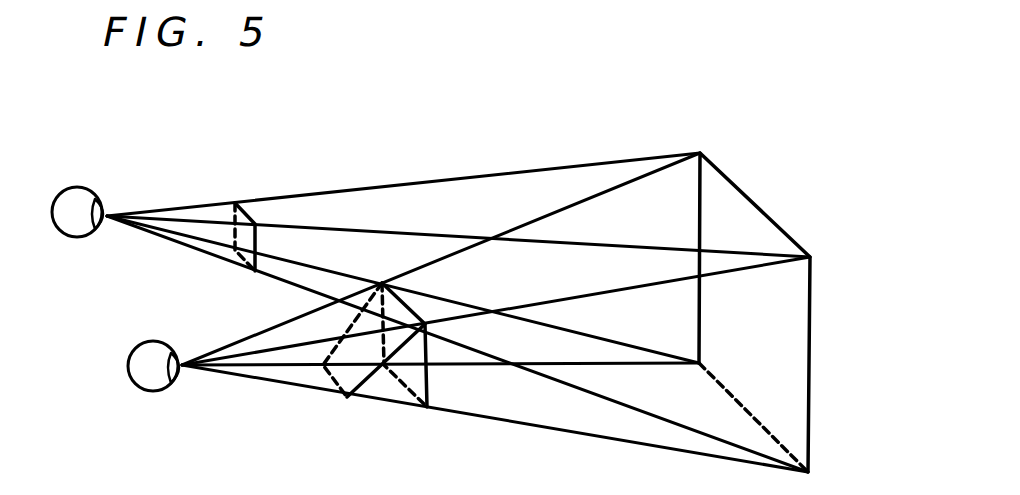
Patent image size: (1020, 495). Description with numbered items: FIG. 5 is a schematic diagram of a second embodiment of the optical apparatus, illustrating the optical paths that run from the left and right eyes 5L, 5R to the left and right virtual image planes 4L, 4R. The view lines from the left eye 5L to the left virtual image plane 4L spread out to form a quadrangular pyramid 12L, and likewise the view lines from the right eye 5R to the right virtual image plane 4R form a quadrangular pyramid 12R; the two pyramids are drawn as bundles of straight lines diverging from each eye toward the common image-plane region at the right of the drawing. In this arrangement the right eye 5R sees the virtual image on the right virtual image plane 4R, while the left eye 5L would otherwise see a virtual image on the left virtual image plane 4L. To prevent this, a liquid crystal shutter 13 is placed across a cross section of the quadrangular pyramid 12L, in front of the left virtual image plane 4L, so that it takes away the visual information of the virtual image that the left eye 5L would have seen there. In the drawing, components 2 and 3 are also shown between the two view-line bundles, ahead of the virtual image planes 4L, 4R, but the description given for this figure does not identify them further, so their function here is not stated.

The prism reflecting face 2 is at (355, 348).
The prism 3 is at (433, 385).
The left virtual image plane 4L is at (796, 312).
The right virtual image plane 4R is at (783, 403).
The left eye 5L is at (74, 238).
The right eye 5R is at (151, 392).
The quadrangular pyramid 12L is at (474, 190).
The quadrangular pyramid 12R is at (673, 268).
The liquid crystal shutter 13 is at (254, 203).